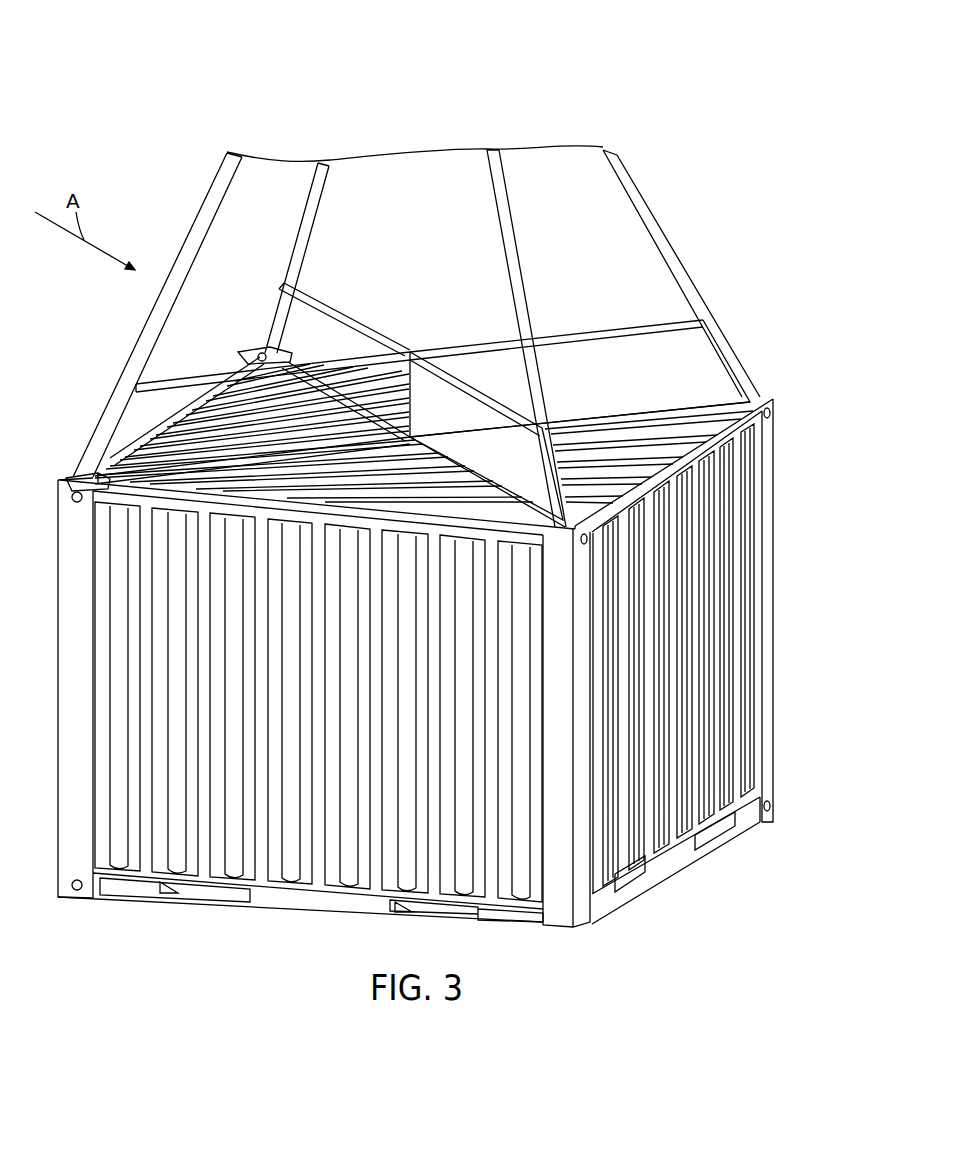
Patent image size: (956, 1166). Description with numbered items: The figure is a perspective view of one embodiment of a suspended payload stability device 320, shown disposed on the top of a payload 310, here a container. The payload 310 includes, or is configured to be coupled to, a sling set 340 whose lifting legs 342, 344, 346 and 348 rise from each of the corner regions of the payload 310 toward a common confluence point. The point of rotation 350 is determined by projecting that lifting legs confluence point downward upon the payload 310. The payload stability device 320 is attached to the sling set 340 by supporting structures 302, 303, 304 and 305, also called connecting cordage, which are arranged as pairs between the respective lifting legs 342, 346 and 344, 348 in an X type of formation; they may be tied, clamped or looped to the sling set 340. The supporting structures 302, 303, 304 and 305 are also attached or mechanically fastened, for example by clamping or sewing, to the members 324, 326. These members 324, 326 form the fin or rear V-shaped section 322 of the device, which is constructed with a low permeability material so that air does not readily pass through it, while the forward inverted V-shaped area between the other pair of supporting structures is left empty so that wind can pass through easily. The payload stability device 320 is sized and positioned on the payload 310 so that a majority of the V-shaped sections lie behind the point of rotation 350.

The payload 310 is at (755, 636).
The sling set 340 is at (548, 68).
The lifting leg 342 is at (612, 154).
The lifting leg 344 is at (492, 156).
The lifting leg 346 is at (233, 154).
The lifting leg 348 is at (319, 163).
The supporting structure 302 is at (187, 377).
The supporting structure 304 is at (321, 303).
The supporting structure 303 is at (128, 462).
The supporting structure 305 is at (268, 356).
The payload stability device 320 is at (592, 318).
The rear V-shaped section 322 is at (450, 333).
The member 324 is at (708, 372).
The member 326 is at (510, 457).
The point of rotation 350 is at (400, 460).